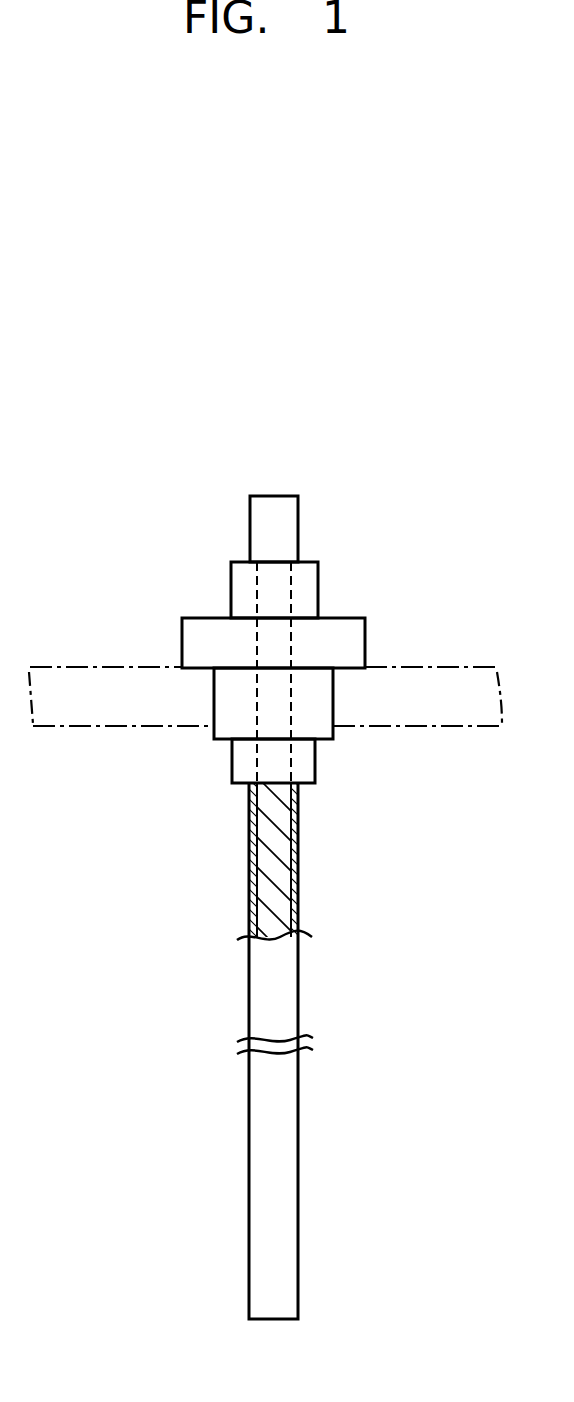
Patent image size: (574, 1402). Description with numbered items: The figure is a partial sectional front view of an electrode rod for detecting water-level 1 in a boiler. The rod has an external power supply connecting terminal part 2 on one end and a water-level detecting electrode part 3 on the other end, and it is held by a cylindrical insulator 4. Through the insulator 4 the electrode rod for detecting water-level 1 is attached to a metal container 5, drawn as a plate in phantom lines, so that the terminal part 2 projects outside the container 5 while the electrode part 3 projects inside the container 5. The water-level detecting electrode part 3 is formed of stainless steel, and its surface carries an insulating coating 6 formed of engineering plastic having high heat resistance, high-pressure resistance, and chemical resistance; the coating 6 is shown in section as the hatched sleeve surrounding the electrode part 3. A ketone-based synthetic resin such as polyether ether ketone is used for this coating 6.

The electrode rod for detecting water-level 1 is at (349, 594).
The external power supply connecting terminal part 2 is at (282, 533).
The water-level detecting electrode part 3 is at (277, 877).
The cylindrical insulator 4 is at (238, 596).
The metal container 5 is at (465, 688).
The insulating coating 6 is at (248, 858).